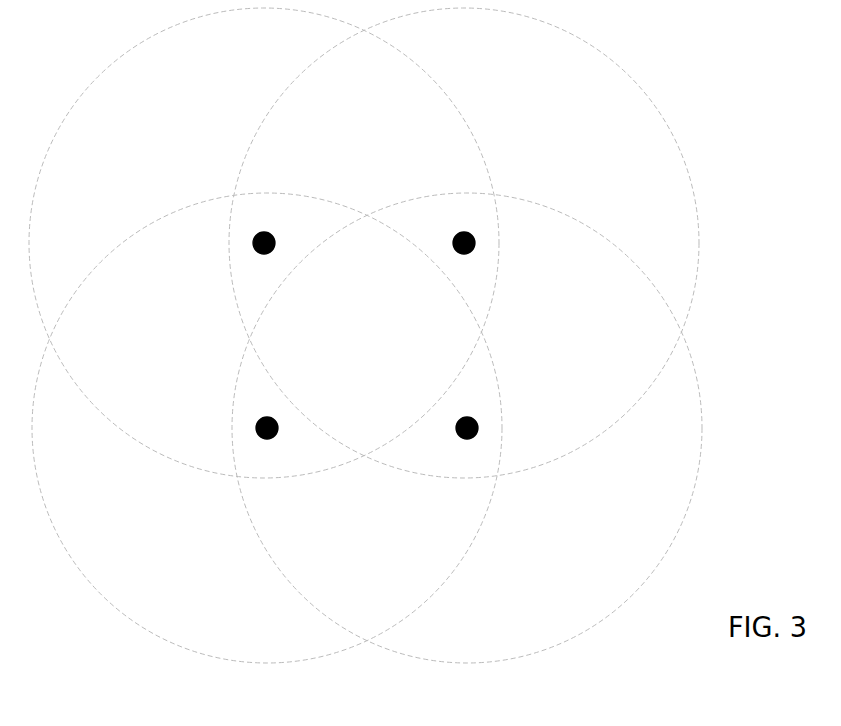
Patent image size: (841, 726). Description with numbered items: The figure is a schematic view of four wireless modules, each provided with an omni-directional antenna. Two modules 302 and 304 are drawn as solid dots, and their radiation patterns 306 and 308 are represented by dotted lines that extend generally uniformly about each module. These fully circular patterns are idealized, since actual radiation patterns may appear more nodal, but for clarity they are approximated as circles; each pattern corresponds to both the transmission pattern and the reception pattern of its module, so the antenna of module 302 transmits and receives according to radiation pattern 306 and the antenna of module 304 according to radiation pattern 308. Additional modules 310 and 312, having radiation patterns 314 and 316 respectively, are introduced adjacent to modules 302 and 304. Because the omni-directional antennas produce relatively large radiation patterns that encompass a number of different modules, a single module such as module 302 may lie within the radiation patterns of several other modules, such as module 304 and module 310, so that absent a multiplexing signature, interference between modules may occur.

The module 302 is at (280, 428).
The module 304 is at (478, 425).
The radiation pattern 306 is at (493, 362).
The radiation pattern 308 is at (290, 580).
The module 310 is at (275, 237).
The module 312 is at (473, 235).
The radiation pattern 314 is at (480, 148).
The radiation pattern 316 is at (245, 157).